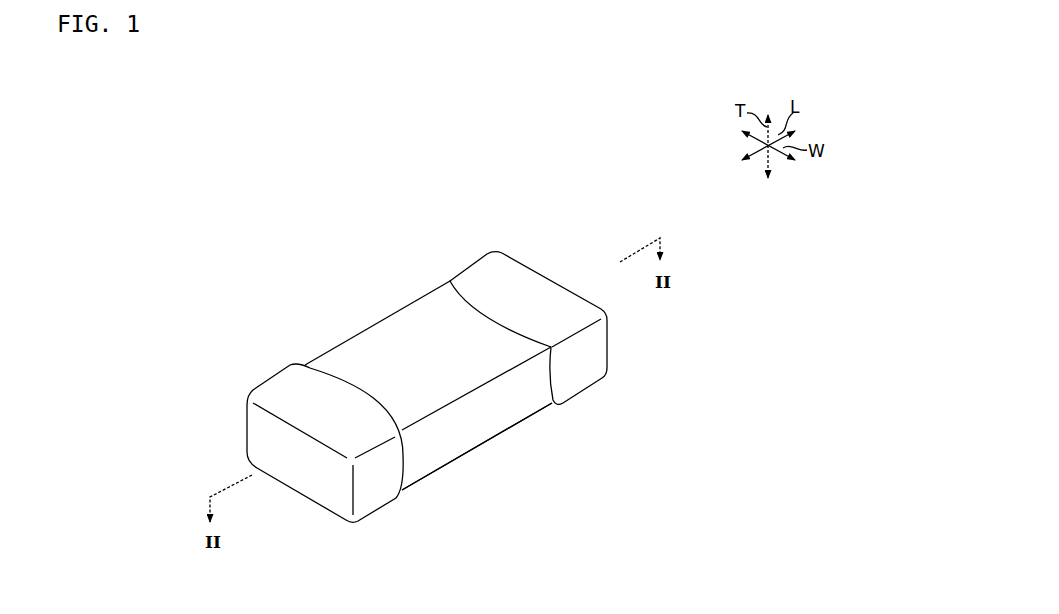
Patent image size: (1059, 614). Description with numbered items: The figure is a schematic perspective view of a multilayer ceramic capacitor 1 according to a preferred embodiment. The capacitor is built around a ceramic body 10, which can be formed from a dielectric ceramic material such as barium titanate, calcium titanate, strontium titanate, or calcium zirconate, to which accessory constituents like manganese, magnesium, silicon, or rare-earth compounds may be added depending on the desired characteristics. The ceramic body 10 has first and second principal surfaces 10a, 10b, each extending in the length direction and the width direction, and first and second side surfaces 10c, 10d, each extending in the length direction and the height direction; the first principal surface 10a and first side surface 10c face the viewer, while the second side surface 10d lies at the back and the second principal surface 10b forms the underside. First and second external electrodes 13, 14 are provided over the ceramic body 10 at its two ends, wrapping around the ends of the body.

The multilayer ceramic capacitor 1 is at (566, 182).
The ceramic body 10 is at (421, 286).
The first principal surface 10a is at (402, 328).
The second principal surface 10b is at (500, 435).
The first side surface 10c is at (448, 448).
The second side surface 10d is at (352, 337).
The first external electrode 13 is at (240, 408).
The second external electrode 14 is at (615, 338).